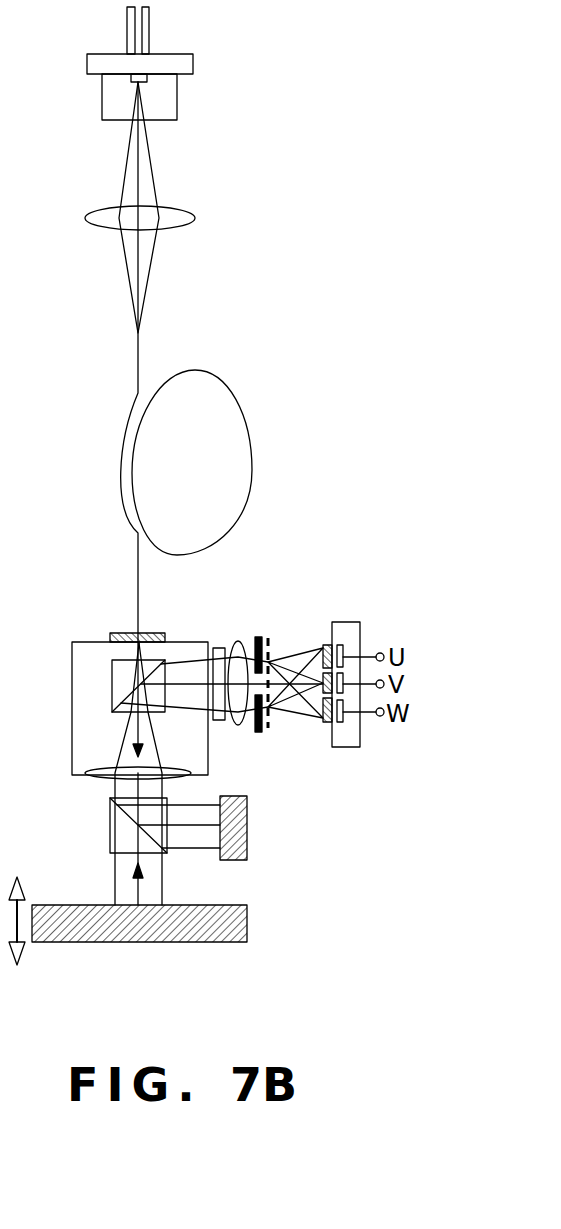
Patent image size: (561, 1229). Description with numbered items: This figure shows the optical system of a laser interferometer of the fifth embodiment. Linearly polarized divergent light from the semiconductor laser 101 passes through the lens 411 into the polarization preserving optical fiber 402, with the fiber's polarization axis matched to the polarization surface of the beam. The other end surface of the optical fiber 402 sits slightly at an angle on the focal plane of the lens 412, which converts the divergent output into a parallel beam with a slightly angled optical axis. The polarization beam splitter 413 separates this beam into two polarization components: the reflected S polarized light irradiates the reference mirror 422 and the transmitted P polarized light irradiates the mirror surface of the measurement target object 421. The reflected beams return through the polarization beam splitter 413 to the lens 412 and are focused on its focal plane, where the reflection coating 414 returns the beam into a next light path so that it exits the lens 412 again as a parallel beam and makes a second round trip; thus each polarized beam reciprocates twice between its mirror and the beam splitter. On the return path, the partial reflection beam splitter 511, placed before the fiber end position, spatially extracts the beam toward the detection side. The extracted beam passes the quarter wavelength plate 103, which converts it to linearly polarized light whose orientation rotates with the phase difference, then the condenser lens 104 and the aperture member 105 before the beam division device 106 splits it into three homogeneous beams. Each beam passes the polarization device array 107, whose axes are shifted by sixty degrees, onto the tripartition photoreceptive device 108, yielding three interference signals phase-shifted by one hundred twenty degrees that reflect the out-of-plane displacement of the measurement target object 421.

The semiconductor laser 101 is at (193, 65).
The lens 411 is at (172, 211).
The polarization preserving optical fiber 402 is at (195, 370).
The reflection coating 414 is at (120, 633).
The partial reflection beam splitter 511 is at (112, 676).
The lens 412 is at (90, 772).
The quarter wavelength plate 103 is at (220, 648).
The condenser lens 104 is at (238, 640).
The aperture member 105 is at (258, 637).
The beam division device 106 is at (268, 638).
The polarization device array 107 is at (323, 645).
The tripartition photoreceptive device 108 is at (340, 645).
The polarization beam splitter 413 is at (110, 822).
The reference mirror 422 is at (247, 825).
The measurement target object 421 is at (212, 942).